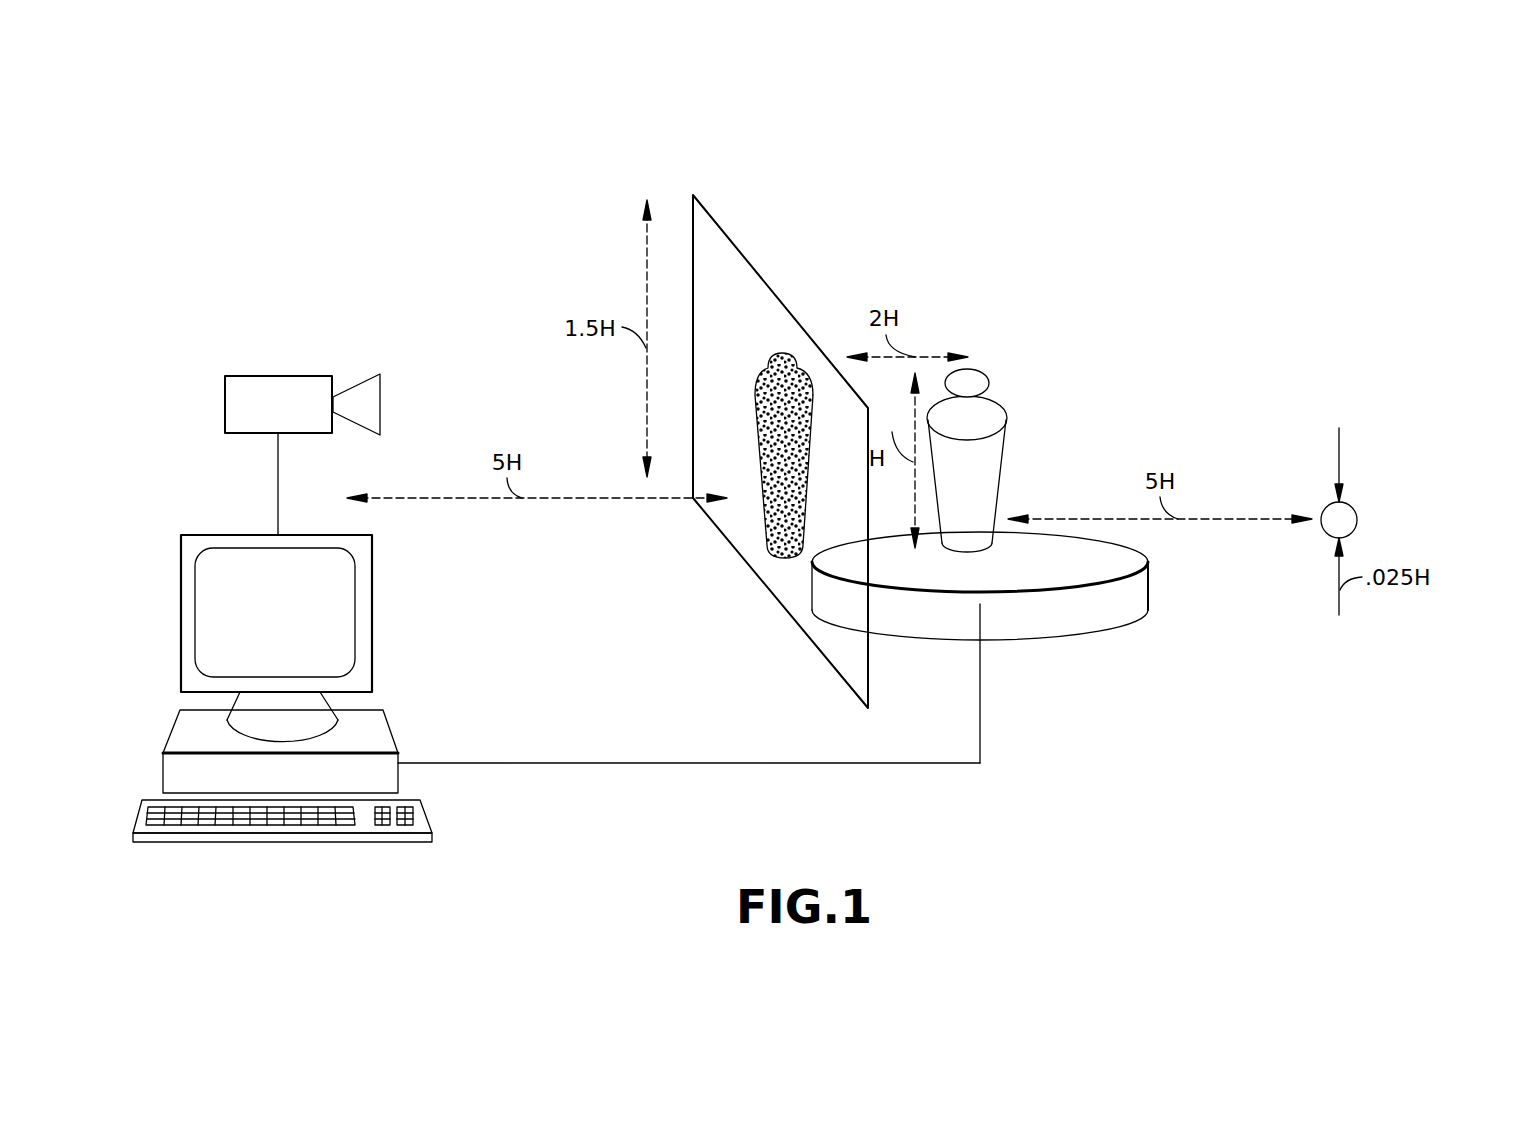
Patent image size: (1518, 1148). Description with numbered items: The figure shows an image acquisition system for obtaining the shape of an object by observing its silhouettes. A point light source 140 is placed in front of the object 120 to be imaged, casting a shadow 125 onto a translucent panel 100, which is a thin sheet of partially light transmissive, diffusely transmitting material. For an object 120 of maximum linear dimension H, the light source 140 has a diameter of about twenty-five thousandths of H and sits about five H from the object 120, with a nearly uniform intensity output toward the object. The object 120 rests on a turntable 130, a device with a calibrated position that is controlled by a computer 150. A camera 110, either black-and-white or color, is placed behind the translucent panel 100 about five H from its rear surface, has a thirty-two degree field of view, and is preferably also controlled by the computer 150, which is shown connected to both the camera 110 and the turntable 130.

The translucent panel 100 is at (720, 226).
The camera 110 is at (265, 376).
The object 120 is at (993, 405).
The shadow 125 is at (792, 355).
The turntable 130 is at (1048, 635).
The point light source 140 is at (1355, 512).
The computer 150 is at (372, 571).